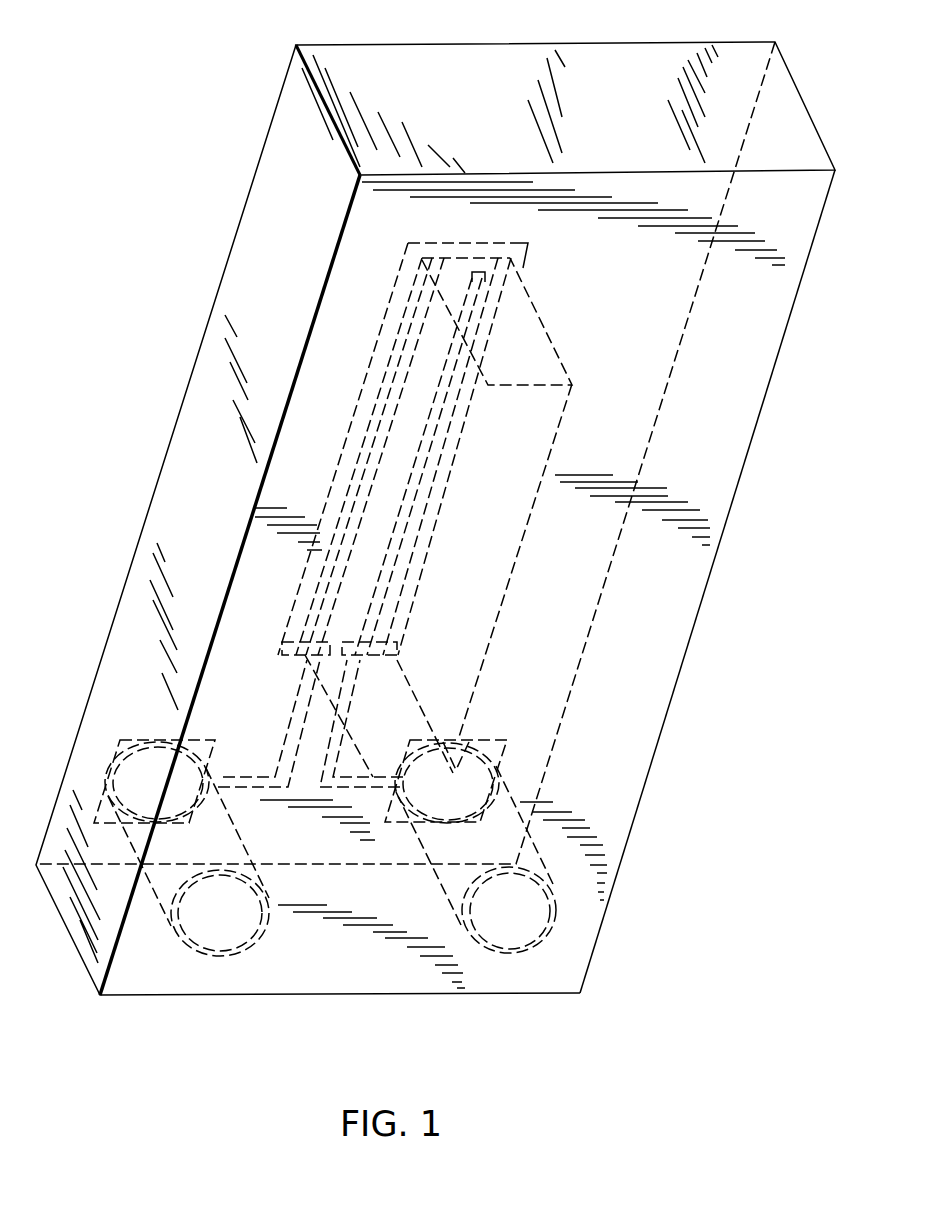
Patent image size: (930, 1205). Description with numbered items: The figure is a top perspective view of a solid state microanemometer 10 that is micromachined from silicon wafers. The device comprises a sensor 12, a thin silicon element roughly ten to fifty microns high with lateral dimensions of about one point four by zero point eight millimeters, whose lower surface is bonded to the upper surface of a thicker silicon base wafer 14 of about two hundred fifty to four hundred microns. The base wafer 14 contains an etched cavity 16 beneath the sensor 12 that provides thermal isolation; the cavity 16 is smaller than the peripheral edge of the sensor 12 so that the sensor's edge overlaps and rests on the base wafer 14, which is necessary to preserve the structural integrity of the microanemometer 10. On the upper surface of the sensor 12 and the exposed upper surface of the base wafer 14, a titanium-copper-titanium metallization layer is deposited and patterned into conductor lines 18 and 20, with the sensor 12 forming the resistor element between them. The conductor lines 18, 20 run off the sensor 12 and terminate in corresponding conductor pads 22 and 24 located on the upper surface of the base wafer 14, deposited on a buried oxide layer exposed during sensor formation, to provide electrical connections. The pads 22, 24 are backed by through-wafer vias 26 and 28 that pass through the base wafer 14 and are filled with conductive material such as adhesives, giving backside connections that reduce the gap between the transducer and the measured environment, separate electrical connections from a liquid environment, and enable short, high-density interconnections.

The microanemometer 10 is at (183, 229).
The sensor 12 is at (505, 245).
The base wafer 14 is at (698, 455).
The etched cavity 16 is at (465, 553).
The conductor line 18 is at (308, 699).
The conductor line 20 is at (353, 692).
The conductor pad 22 is at (140, 772).
The conductor pad 24 is at (455, 785).
The through-wafer via 26 is at (195, 850).
The through-wafer via 28 is at (486, 842).